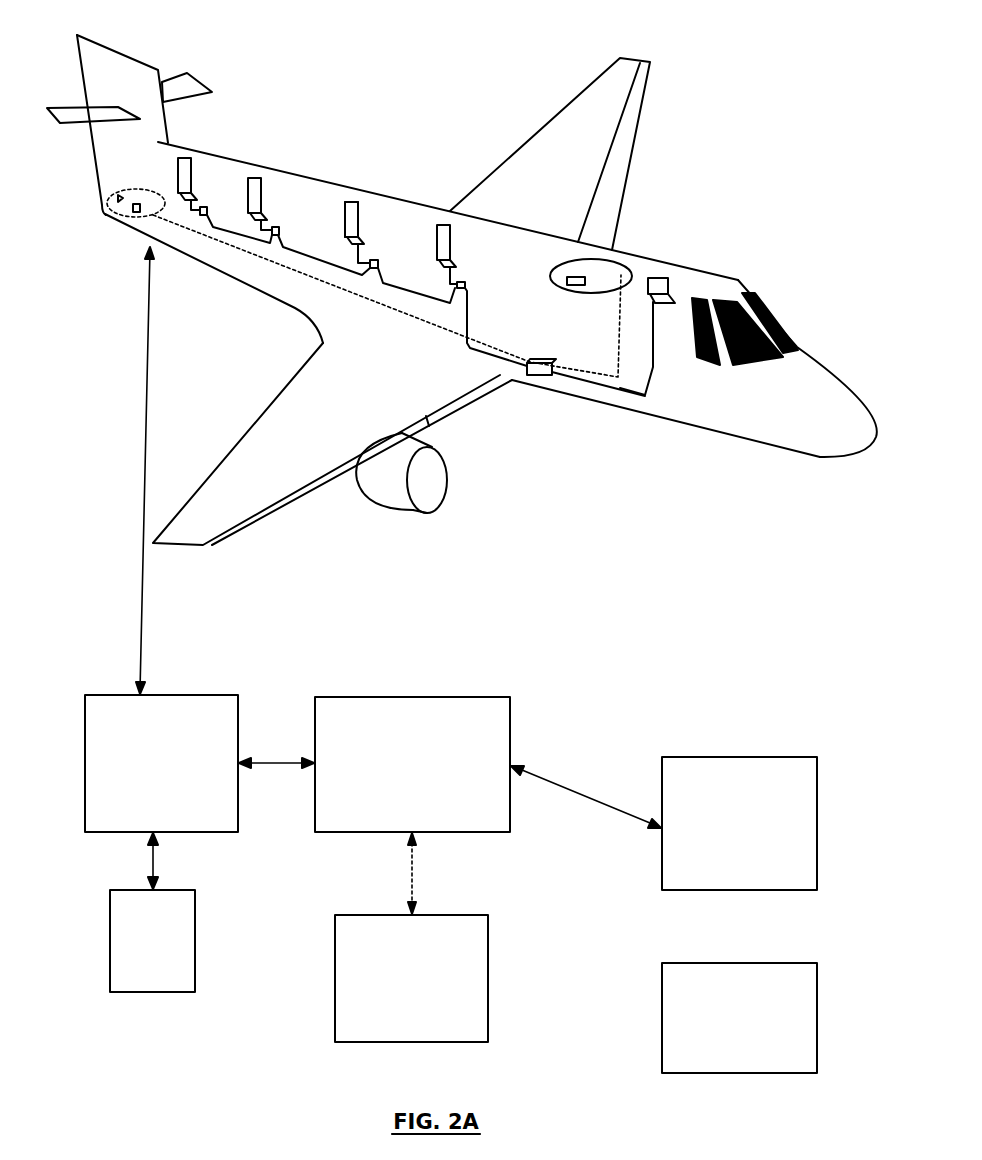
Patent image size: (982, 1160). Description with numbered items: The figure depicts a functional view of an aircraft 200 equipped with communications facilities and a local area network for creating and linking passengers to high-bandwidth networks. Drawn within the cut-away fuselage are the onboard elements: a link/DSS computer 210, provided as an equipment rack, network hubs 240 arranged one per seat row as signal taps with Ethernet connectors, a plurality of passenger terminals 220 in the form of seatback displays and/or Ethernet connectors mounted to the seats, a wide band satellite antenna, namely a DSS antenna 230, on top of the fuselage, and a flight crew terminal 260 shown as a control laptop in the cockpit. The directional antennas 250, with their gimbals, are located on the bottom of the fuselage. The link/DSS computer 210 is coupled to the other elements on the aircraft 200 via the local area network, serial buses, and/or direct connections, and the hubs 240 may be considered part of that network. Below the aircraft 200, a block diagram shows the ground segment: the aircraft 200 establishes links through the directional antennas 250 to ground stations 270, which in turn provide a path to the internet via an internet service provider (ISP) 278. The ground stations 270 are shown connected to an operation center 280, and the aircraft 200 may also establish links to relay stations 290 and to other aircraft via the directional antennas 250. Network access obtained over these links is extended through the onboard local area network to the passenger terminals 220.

The aircraft 200 is at (481, 32).
The link/DSS computer 210 is at (545, 392).
The passenger terminals 220 is at (376, 210).
The DSS antenna 230 is at (604, 257).
The network hubs 240 is at (209, 194).
The directional antennas 250 is at (119, 223).
The flight crew terminals 260 is at (662, 275).
The ground stations 270 is at (218, 695).
The internet service provider (ISP) 278 is at (173, 888).
The operation center 280 is at (495, 697).
The relay stations 290 is at (792, 963).